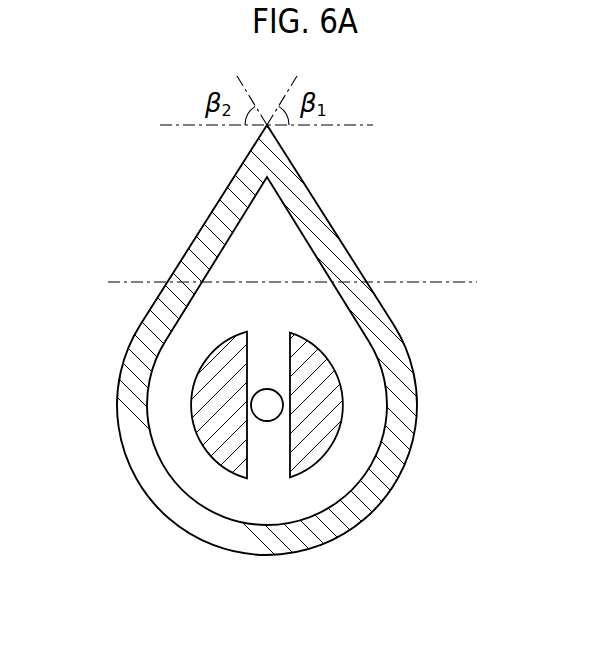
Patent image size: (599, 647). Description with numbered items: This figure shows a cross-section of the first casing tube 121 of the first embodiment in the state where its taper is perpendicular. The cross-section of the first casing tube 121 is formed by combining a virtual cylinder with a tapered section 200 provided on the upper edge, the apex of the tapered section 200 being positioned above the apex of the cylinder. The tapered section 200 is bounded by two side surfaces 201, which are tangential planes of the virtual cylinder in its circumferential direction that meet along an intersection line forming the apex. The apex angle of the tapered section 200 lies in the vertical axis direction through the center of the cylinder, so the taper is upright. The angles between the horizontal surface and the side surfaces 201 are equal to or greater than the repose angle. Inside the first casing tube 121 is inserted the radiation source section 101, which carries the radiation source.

The tapered section 200 is at (360, 215).
The side surfaces of the tapered section 201 is at (190, 245).
The first casing tube 121 is at (418, 397).
The radiation source section 101 is at (323, 453).